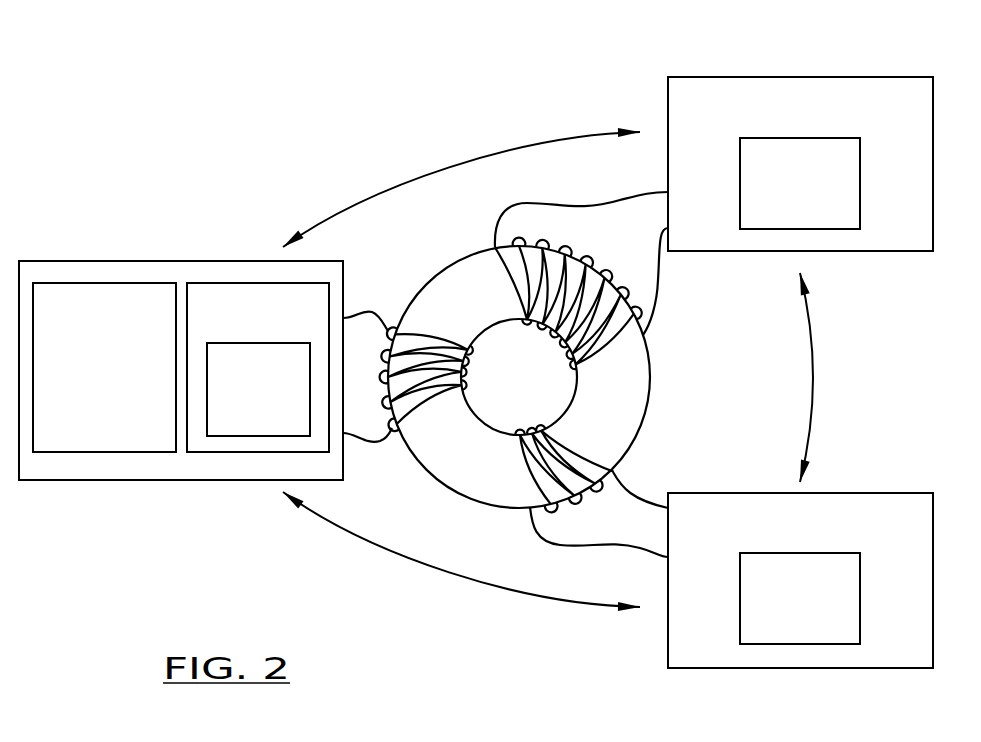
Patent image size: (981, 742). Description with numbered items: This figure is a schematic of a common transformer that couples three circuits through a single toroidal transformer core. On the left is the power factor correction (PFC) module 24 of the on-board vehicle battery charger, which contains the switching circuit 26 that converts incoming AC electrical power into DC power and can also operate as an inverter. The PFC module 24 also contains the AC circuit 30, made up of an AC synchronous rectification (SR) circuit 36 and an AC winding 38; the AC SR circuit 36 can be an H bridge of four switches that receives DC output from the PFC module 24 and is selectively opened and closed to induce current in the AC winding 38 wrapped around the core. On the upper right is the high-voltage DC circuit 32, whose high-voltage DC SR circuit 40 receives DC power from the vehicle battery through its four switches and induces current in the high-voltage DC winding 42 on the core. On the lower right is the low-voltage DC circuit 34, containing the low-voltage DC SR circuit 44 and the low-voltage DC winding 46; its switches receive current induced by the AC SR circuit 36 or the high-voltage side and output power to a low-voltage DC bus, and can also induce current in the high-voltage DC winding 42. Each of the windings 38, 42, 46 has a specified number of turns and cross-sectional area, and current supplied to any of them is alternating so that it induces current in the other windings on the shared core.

The power factor correction (PFC) module 24 is at (80, 261).
The switching circuit 26 is at (90, 376).
The AC circuit 30 is at (244, 327).
The AC synchronous rectification (SR) circuit 36 is at (244, 401).
The high-voltage DC circuit 32 is at (783, 119).
The high-voltage DC SR circuit 40 is at (783, 197).
The low-voltage DC circuit 34 is at (783, 537).
The low-voltage DC SR circuit 44 is at (783, 616).
The AC winding 38 is at (377, 326).
The high-voltage DC winding 42 is at (617, 348).
The low-voltage DC winding 46 is at (520, 479).